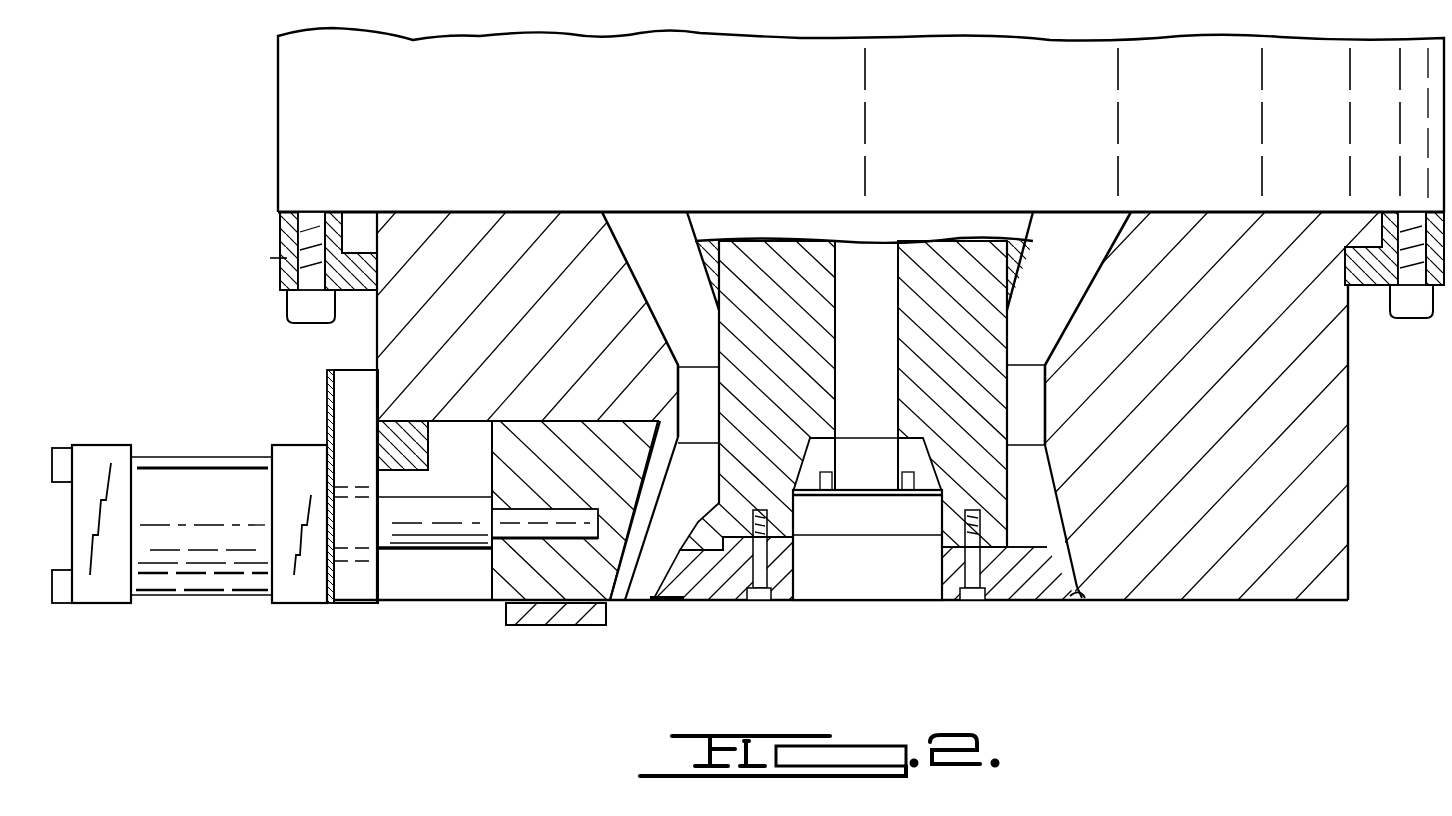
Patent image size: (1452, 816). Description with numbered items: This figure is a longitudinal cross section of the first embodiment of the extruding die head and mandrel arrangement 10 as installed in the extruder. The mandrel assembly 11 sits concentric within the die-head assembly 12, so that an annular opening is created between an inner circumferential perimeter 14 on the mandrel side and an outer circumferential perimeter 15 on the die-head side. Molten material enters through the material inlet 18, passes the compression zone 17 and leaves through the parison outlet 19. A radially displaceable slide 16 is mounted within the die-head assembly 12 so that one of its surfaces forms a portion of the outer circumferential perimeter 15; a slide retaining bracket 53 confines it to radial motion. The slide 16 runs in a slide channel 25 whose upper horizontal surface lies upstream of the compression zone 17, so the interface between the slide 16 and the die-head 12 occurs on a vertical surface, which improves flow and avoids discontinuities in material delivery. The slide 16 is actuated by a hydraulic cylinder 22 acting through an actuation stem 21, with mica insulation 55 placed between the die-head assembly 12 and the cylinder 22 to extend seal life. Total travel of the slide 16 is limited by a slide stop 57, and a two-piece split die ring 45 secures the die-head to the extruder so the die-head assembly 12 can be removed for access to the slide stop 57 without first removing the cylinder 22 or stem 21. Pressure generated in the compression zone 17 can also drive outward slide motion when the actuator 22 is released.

The molding apparatus 10 is at (1336, 656).
The mandrel assembly 11 is at (985, 281).
The die-head assembly 12 is at (1328, 410).
The inner circumferential perimeter 14 is at (1078, 602).
The outer circumferential perimeter 15 is at (1098, 592).
The radially displaceable slide 16 is at (507, 583).
The compression zone 17 is at (1060, 536).
The material inlet 18 is at (652, 212).
The parison outlet 19 is at (641, 592).
The actuation stem 21 is at (418, 603).
The hydraulic cylinder 22 is at (196, 490).
The slide channel 25 is at (563, 428).
The split die ring 45 is at (270, 258).
The slide retaining bracket 53 is at (550, 620).
The mica insulation 55 is at (330, 603).
The slide stop 57 is at (400, 455).